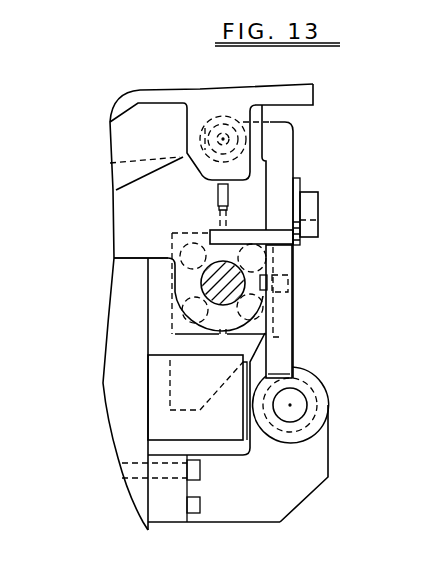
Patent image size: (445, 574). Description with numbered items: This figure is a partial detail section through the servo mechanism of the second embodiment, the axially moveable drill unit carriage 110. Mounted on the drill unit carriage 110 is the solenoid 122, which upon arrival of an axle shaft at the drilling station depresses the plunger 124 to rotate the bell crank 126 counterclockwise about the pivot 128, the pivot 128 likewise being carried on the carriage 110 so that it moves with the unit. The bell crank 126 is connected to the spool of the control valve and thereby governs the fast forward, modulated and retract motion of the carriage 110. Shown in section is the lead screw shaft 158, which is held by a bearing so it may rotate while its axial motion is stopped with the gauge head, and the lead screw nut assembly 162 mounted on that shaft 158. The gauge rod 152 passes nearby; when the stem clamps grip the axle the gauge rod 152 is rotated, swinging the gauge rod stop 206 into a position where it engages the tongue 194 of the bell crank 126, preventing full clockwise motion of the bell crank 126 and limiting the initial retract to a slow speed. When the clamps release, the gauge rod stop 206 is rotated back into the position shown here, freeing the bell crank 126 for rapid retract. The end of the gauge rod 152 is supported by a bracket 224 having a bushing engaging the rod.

The drill unit carriage 110 is at (122, 415).
The solenoid 122 is at (303, 92).
The plunger 124 is at (216, 198).
The bell crank 126 is at (283, 262).
The pivot 128 is at (313, 200).
The gauge rod 152 is at (297, 406).
The lead screw shaft 158 is at (247, 293).
The lead screw nut assembly 162 is at (177, 312).
The tongue 194 is at (285, 331).
The gauge rod stop 206 is at (318, 380).
The bracket 224 is at (298, 487).